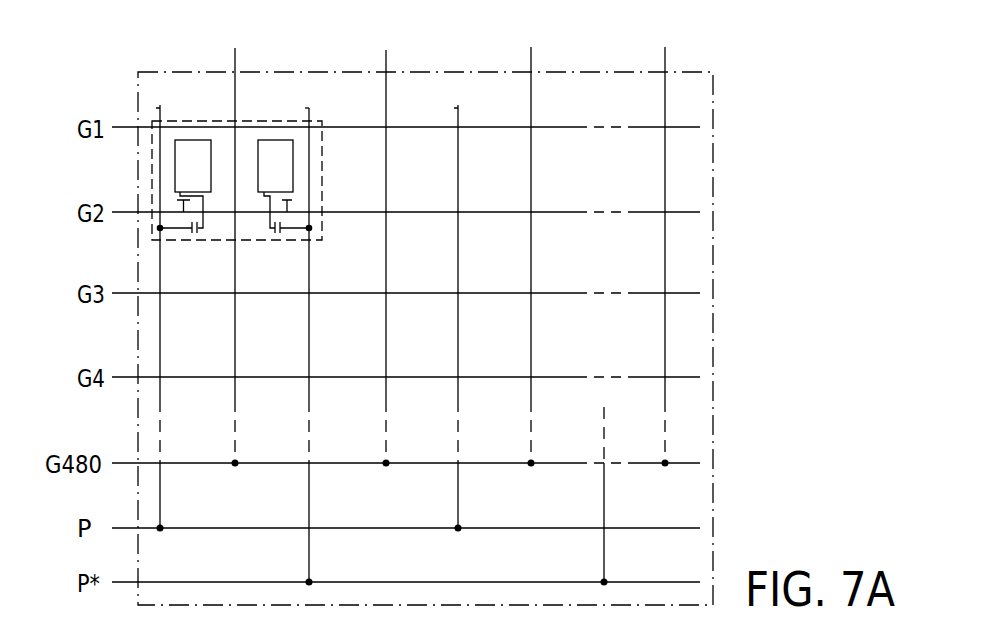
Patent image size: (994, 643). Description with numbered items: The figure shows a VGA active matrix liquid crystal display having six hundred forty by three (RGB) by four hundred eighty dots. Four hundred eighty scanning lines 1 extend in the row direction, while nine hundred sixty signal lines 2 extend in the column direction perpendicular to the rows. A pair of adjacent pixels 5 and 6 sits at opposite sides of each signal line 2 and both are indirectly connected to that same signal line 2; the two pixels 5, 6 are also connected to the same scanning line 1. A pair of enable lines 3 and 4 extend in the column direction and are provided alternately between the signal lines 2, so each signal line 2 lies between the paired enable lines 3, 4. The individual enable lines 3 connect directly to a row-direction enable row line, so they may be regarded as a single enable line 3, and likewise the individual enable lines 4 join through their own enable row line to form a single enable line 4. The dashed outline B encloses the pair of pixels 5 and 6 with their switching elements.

The scanning line 1 is at (542, 127).
The signal line 2 is at (235, 82).
The enable line 3 is at (160, 106).
The enable line 4 is at (309, 108).
The pixel 5 is at (195, 147).
The pixel 6 is at (278, 147).
The unit pixel block B is at (330, 197).